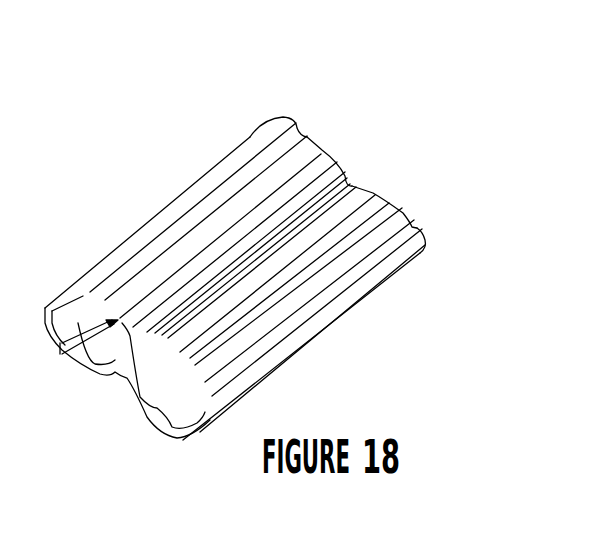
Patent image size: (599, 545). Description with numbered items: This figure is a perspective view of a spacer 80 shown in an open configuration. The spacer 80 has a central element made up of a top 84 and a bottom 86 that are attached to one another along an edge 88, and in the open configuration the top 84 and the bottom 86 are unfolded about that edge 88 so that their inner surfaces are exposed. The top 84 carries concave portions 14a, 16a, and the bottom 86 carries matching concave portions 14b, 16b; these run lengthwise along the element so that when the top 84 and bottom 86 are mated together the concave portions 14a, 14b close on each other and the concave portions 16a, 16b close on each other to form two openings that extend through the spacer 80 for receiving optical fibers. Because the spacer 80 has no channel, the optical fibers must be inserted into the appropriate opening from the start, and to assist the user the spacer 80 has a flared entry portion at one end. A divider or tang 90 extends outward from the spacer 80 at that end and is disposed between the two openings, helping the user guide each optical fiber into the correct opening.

The spacer 80 is at (275, 98).
The top 84 is at (158, 227).
The bottom 86 is at (306, 343).
The edge 88 is at (348, 183).
The concave portion 14a is at (325, 163).
The concave portion 14b is at (378, 194).
The concave portion 16a is at (298, 128).
The concave portion 16b is at (405, 231).
The tang 90 is at (62, 355).